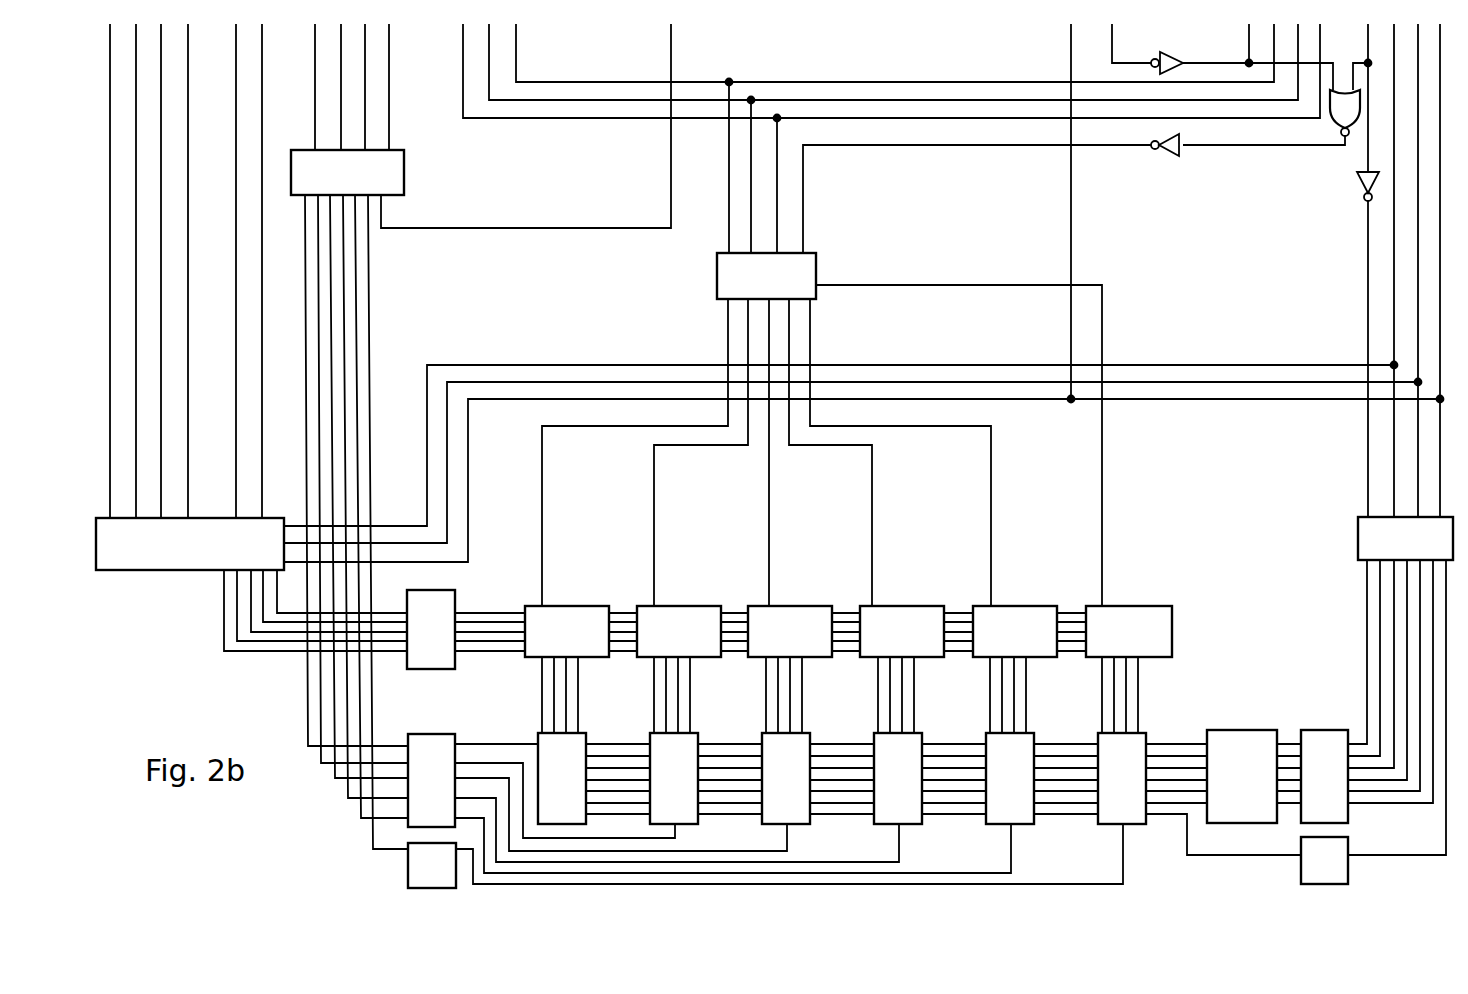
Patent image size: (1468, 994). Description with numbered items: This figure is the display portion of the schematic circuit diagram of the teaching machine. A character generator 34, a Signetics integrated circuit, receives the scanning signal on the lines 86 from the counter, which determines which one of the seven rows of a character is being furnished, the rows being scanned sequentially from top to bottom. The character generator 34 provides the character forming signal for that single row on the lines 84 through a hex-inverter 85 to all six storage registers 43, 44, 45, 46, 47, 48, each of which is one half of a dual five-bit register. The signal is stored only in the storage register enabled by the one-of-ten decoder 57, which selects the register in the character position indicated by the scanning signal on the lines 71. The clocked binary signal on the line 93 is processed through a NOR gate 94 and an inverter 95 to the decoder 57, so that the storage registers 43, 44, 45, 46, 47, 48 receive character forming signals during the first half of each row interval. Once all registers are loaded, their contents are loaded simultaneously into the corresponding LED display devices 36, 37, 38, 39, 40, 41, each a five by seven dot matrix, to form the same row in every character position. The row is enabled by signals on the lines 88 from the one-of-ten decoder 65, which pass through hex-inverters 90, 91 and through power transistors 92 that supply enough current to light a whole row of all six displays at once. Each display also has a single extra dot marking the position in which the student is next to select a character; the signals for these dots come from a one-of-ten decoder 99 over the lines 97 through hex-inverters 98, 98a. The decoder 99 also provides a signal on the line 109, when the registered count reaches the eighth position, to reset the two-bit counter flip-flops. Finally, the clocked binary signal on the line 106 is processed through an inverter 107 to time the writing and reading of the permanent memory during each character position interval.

The character generator 34 is at (172, 572).
The display device 36 is at (580, 733).
The display device 37 is at (692, 733).
The display device 38 is at (804, 733).
The display device 39 is at (916, 733).
The display device 40 is at (1028, 733).
The display device 41 is at (1138, 733).
The storage register 43 is at (567, 606).
The storage register 44 is at (680, 606).
The storage register 45 is at (782, 606).
The storage register 46 is at (898, 606).
The storage register 47 is at (1017, 606).
The storage register 48 is at (1130, 606).
The one-of-ten decoder 57 is at (816, 256).
The one-of-ten decoder 65 is at (1360, 517).
The lines 71 is at (1244, 30).
The lines 84 is at (207, 604).
The hex-inverter 85 is at (456, 598).
The lines 86 is at (1350, 239).
The lines 88 is at (1350, 645).
The hex-inverter 90 is at (1313, 730).
The hex-inverter 91 is at (1350, 873).
The power transistors 92 is at (1228, 730).
The line 93 is at (1367, 39).
The NOR gate 94 is at (1330, 116).
The inverter 95 is at (1181, 151).
The lines 97 is at (386, 286).
The hex-inverter 98 is at (435, 734).
The hex-inverter 98a is at (408, 860).
The one-of-ten decoder 99 is at (404, 177).
The line 106 is at (1247, 57).
The inverter 107 is at (1166, 57).
The line 109 is at (518, 228).